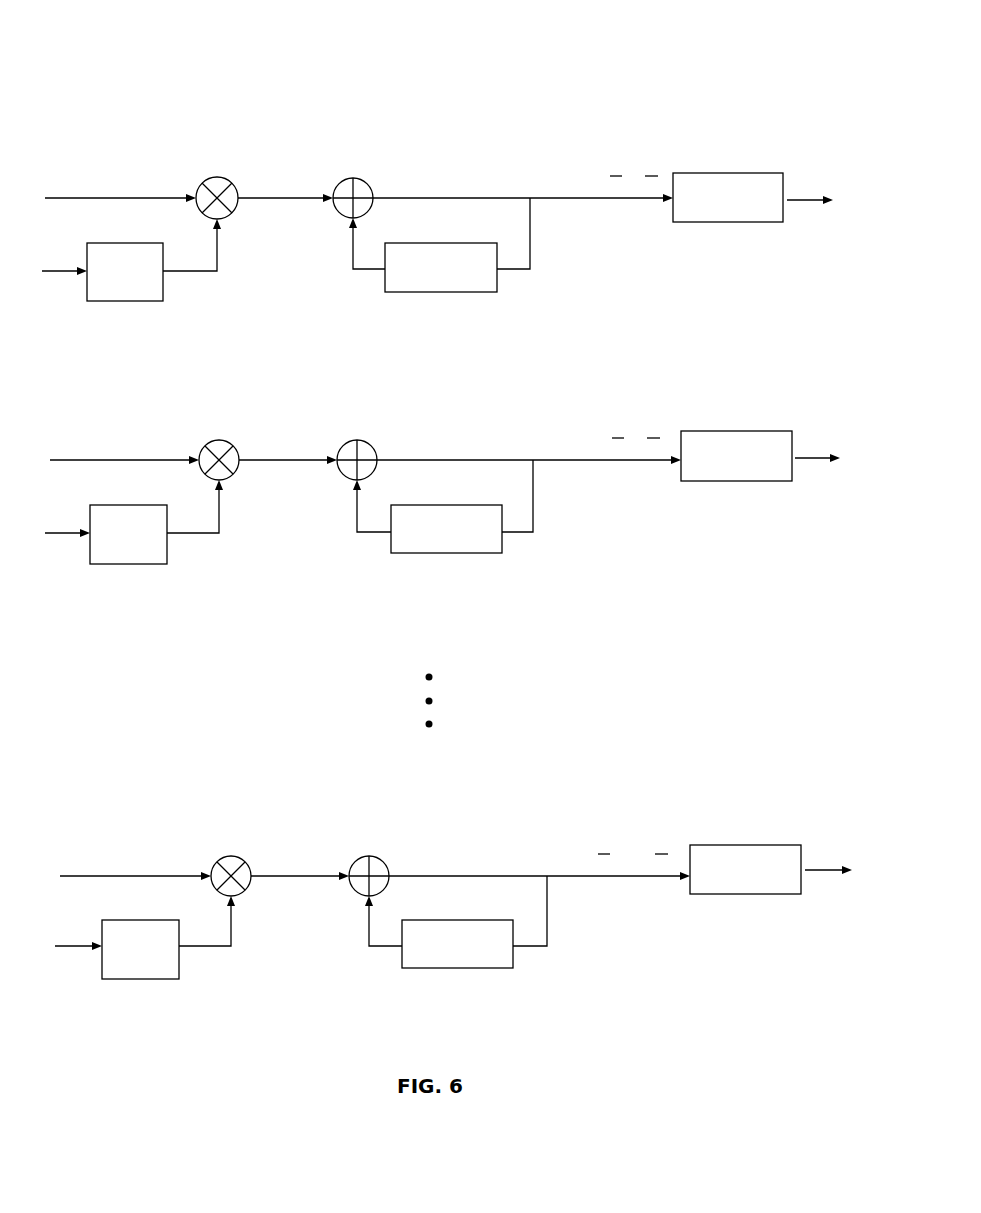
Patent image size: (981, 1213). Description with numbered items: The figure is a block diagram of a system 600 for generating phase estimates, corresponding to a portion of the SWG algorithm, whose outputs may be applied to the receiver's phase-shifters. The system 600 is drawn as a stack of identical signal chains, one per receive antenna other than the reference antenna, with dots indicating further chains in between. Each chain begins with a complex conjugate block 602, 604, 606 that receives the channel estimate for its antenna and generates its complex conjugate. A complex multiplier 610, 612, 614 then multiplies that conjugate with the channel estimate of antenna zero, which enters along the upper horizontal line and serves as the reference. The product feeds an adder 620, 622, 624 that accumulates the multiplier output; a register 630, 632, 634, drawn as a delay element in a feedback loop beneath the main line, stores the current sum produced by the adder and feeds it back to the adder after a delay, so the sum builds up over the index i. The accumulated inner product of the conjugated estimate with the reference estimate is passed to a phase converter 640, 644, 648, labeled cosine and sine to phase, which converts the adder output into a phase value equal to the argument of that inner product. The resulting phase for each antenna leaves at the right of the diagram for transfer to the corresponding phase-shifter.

The system 600 is at (100, 59).
The complex conjugate block 602 is at (148, 309).
The complex conjugate block 604 is at (172, 573).
The complex conjugate block 606 is at (175, 988).
The complex multiplier 610 is at (222, 163).
The complex multiplier 612 is at (243, 448).
The complex multiplier 614 is at (232, 847).
The adder 620 is at (406, 159).
The adder 622 is at (386, 449).
The adder 624 is at (389, 848).
The register 630 is at (420, 305).
The register 632 is at (443, 569).
The register 634 is at (497, 972).
The phase converter 640 is at (692, 155).
The phase converter 644 is at (703, 418).
The phase converter 648 is at (707, 828).